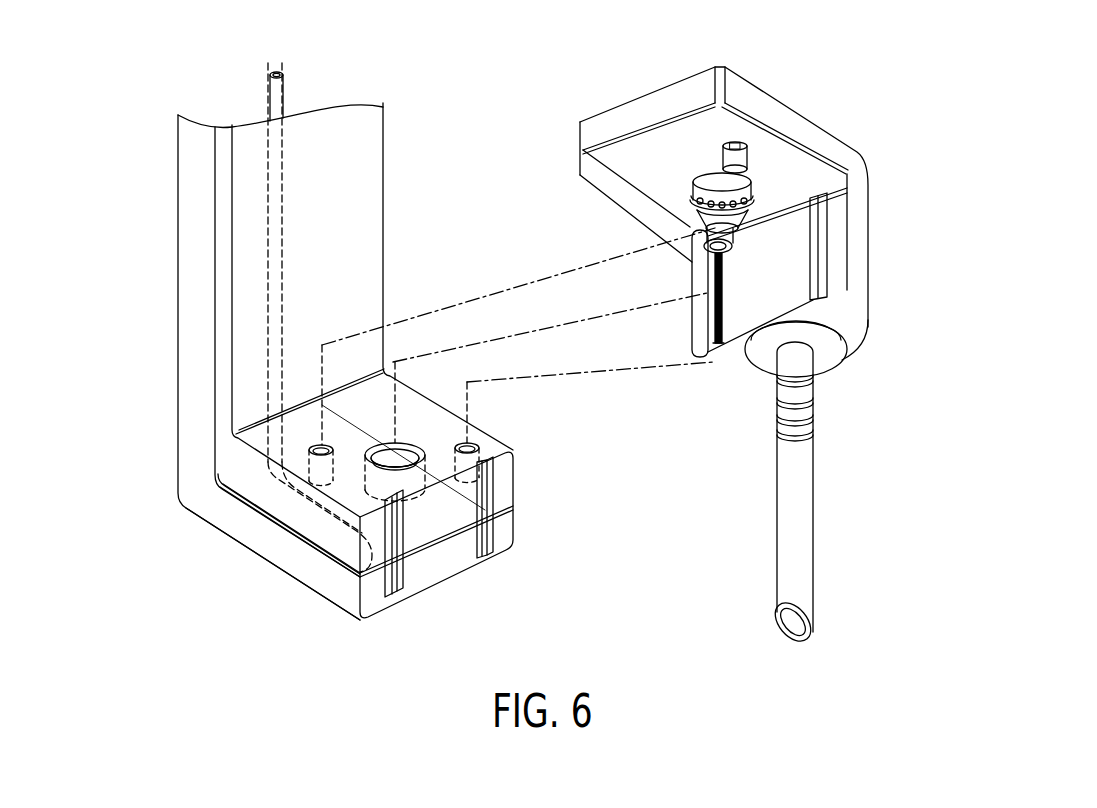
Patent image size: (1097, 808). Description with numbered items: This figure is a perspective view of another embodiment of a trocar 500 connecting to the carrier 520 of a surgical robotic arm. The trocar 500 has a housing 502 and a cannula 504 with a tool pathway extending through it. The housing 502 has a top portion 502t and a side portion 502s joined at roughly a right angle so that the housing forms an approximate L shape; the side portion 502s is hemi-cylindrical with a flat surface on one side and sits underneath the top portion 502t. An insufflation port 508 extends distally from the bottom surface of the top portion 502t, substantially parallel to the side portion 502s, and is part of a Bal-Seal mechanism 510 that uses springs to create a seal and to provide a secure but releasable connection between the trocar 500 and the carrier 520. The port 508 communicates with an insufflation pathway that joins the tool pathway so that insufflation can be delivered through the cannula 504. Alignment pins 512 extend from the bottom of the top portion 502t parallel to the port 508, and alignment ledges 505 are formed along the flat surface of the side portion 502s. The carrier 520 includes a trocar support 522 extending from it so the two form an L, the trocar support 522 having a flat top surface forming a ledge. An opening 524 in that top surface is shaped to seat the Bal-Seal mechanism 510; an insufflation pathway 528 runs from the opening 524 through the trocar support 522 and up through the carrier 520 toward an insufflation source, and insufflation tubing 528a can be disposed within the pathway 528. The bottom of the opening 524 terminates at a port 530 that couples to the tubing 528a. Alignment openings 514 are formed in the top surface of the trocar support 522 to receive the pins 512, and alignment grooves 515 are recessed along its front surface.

The trocar 500 is at (902, 160).
The housing 502 is at (733, 243).
The top portion 502t is at (578, 140).
The side portion 502s is at (867, 322).
The cannula 504 is at (813, 538).
The alignment ledges 505 is at (827, 290).
The insufflation port 508 is at (707, 262).
The Bal-Seal mechanism 510 is at (787, 177).
The alignment pins 512 is at (742, 157).
The alignment openings 514 is at (322, 405).
The alignment grooves 515 is at (510, 547).
The carrier 520 is at (143, 348).
The trocar support 522 is at (303, 593).
The opening 524 is at (410, 442).
The insufflation pathway 528 is at (290, 92).
The insufflation tubing 528a is at (270, 95).
The port 530 is at (397, 497).